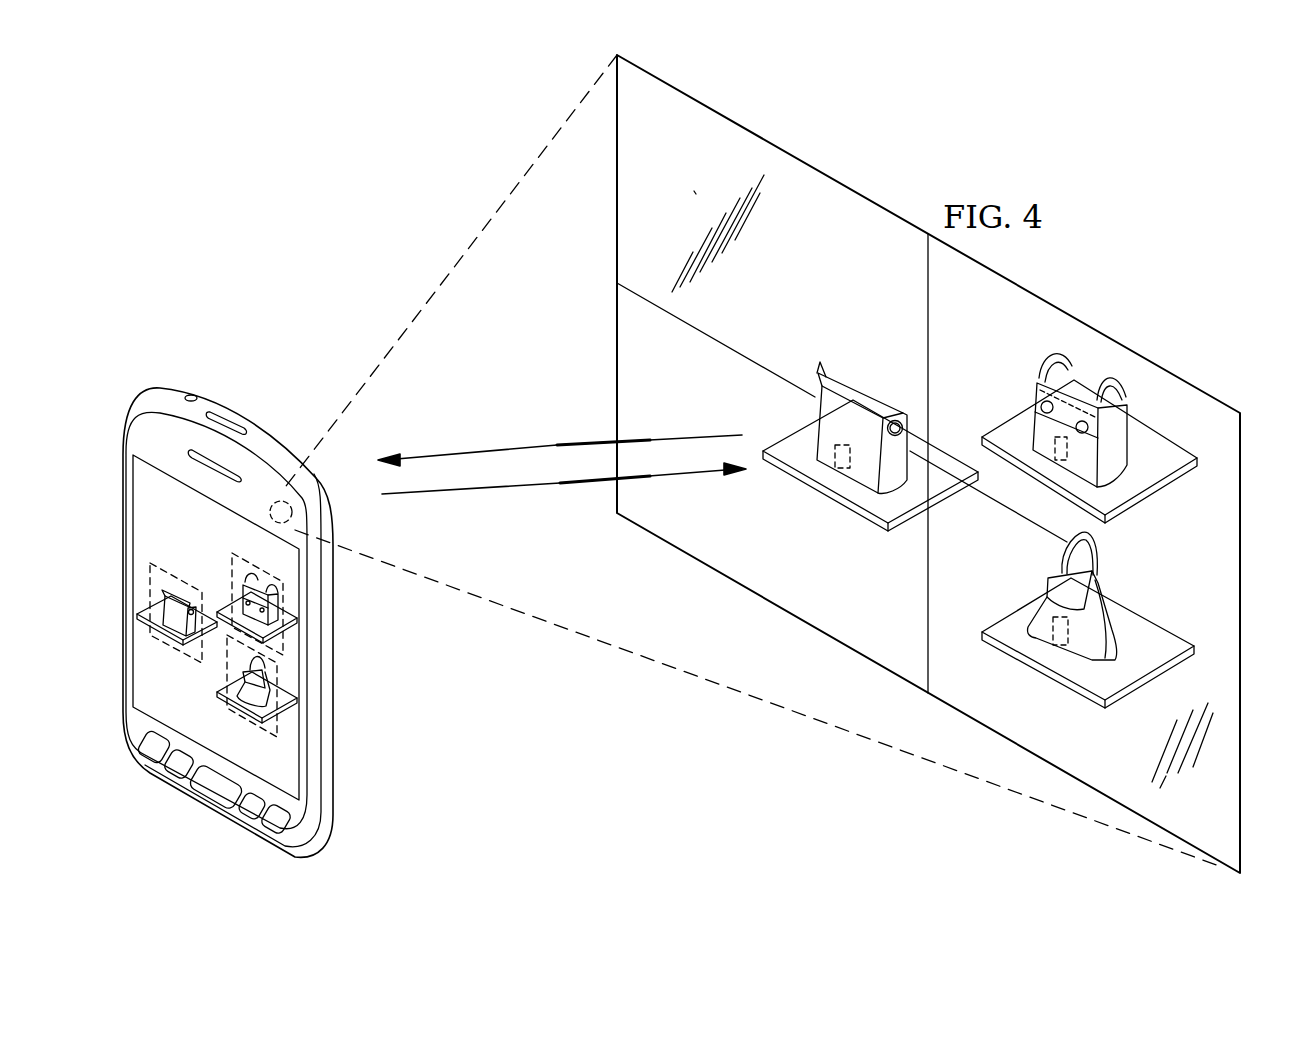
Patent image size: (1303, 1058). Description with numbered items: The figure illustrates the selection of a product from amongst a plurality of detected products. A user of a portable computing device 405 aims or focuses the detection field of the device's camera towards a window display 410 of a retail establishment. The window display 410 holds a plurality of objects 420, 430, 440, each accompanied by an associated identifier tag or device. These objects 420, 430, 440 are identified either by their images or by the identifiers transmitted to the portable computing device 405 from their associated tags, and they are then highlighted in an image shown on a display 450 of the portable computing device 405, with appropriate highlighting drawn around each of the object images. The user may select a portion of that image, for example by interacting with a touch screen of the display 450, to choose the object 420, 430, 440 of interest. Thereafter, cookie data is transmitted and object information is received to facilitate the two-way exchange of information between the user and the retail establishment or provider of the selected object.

The portable computing device 405 is at (162, 392).
The window display 410 is at (627, 338).
The object 420 is at (863, 390).
The object 430 is at (1097, 552).
The object 440 is at (1040, 382).
The display 450 is at (285, 750).